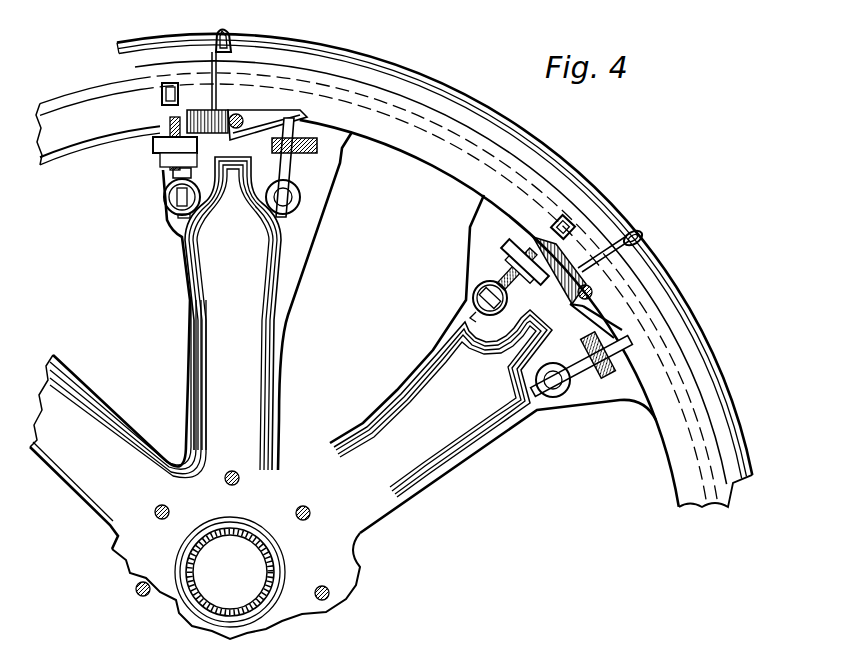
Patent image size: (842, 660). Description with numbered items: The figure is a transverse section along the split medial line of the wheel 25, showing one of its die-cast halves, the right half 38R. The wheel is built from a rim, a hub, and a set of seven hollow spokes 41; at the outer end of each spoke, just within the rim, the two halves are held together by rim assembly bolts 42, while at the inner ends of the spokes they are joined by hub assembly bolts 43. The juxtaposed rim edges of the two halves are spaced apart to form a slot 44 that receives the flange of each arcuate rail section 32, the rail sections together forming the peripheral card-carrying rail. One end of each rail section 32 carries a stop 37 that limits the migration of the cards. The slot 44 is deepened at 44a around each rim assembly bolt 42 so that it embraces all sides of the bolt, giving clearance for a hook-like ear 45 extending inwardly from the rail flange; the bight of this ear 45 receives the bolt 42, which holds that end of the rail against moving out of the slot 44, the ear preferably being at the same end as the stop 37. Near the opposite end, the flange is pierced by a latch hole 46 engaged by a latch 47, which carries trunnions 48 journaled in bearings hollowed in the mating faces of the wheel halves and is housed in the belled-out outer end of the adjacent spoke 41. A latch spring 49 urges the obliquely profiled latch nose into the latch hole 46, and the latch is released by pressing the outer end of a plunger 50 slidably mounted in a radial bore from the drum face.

The wheel 25 is at (437, 471).
The rail section 32 is at (735, 397).
The stop 37 is at (228, 36).
The right half 38R is at (240, 398).
The hollow spoke 41 is at (260, 343).
The rim assembly bolt 42 is at (226, 128).
The hub assembly bolt 43 is at (298, 512).
The slot 44 is at (345, 139).
The deepened slot region 44a is at (177, 177).
The hook-like ear 45 is at (242, 133).
The latch hole 46 is at (160, 94).
The latch 47 is at (172, 141).
The trunnion 48 is at (155, 150).
The latch spring 49 is at (166, 200).
The plunger 50 is at (128, 84).